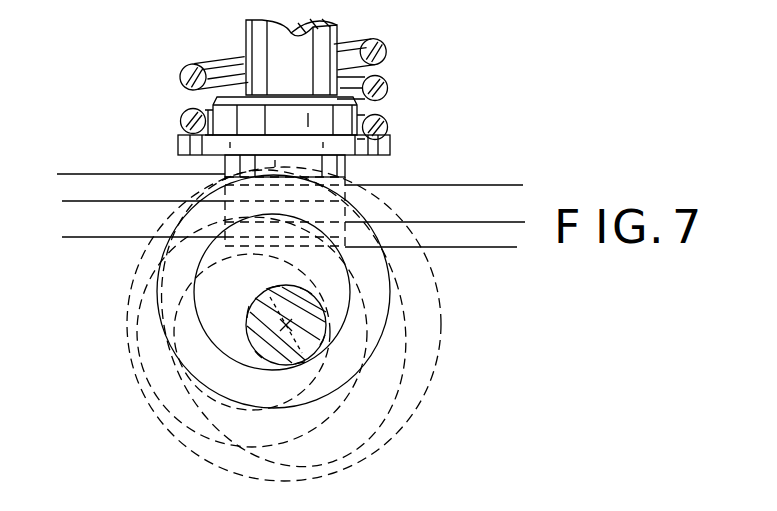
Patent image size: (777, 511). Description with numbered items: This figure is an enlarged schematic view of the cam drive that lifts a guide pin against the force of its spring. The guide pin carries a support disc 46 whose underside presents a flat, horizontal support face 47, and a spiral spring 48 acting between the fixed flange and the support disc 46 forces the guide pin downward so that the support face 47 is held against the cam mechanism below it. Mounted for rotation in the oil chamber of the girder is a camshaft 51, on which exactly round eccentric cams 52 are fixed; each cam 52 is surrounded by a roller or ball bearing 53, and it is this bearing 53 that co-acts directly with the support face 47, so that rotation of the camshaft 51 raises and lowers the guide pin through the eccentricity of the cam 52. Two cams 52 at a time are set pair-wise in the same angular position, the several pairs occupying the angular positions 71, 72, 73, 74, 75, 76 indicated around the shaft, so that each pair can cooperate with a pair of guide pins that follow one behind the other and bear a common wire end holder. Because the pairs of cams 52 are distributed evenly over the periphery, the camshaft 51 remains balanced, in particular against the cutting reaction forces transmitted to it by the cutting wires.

The support disc 46 is at (390, 138).
The support face 47 is at (346, 182).
The spiral spring 48 is at (388, 56).
The camshaft 51 is at (157, 278).
The eccentric cam 52 is at (218, 268).
The bearing 53 is at (250, 333).
The angular position 71 is at (312, 290).
The angular position 72 is at (326, 336).
The angular position 73 is at (298, 363).
The angular position 74 is at (260, 358).
The angular position 75 is at (247, 309).
The angular position 76 is at (278, 289).